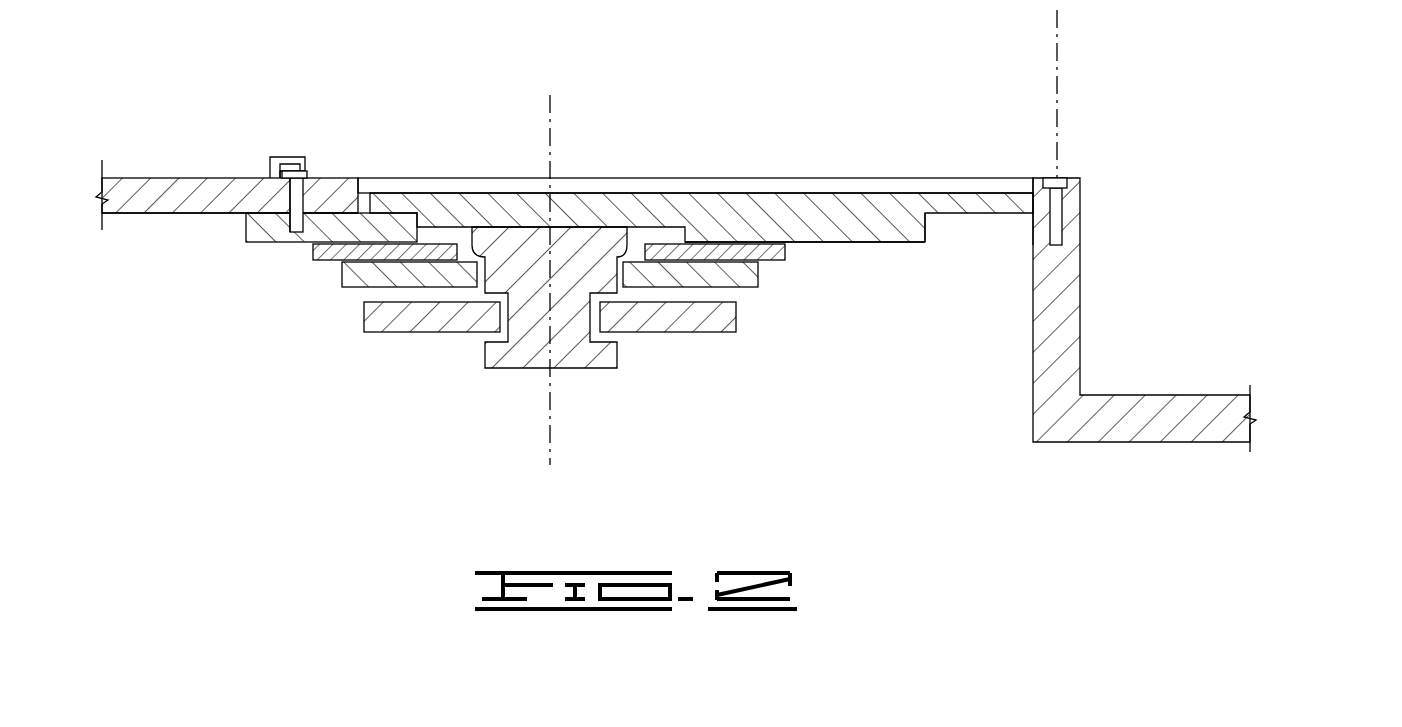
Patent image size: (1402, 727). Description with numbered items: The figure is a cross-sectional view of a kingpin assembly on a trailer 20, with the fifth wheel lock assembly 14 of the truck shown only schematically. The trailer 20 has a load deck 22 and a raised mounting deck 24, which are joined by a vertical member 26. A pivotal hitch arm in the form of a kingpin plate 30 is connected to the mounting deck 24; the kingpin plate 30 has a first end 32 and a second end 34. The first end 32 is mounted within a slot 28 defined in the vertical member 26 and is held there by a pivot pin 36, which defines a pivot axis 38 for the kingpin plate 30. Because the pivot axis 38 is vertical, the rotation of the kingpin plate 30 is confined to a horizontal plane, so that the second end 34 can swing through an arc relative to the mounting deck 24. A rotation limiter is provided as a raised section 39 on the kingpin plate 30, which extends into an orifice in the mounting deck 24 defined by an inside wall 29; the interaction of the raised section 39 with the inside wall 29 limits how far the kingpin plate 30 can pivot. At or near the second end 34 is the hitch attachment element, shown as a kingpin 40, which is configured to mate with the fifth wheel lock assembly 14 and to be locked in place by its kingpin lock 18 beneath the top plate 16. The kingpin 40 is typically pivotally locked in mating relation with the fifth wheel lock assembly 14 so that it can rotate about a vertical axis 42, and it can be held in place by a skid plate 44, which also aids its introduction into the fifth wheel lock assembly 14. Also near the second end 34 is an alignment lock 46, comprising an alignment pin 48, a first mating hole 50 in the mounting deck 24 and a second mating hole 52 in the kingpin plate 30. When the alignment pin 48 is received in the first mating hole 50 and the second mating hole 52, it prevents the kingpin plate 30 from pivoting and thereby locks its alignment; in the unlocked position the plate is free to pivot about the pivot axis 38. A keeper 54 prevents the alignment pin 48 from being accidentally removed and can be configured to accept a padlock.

The fifth wheel lock assembly 14 is at (798, 358).
The top plate 16 is at (758, 275).
The kingpin lock 18 is at (668, 332).
The trailer 20 is at (1250, 258).
The load deck 22 is at (1178, 443).
The mounting deck 24 is at (333, 178).
The vertical member 26 is at (1080, 325).
The slot 28 is at (1065, 210).
The inside wall 29 is at (755, 183).
The kingpin plate 30 is at (903, 243).
The first end 32 is at (1080, 190).
The second end 34 is at (240, 228).
The pivot pin 36 is at (1055, 228).
The pivot axis 38 is at (1062, 35).
The raised section 39 is at (410, 193).
The kingpin 40 is at (492, 362).
The vertical axis 42 is at (552, 115).
The skid plate 44 is at (790, 252).
The alignment lock 46 is at (273, 133).
The alignment pin 48 is at (290, 190).
The first mating hole 50 is at (300, 243).
The second mating hole 52 is at (300, 243).
The keeper 54 is at (297, 157).